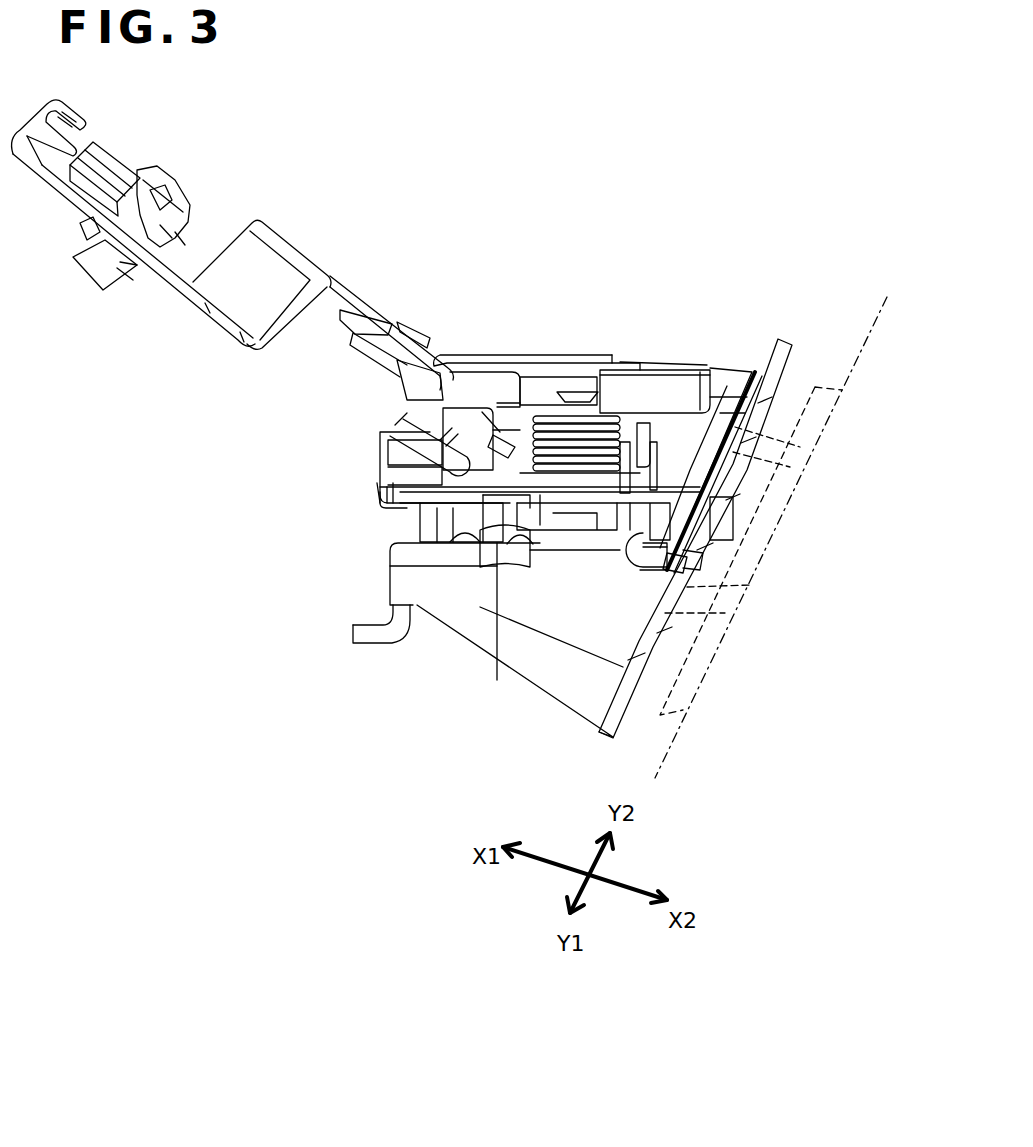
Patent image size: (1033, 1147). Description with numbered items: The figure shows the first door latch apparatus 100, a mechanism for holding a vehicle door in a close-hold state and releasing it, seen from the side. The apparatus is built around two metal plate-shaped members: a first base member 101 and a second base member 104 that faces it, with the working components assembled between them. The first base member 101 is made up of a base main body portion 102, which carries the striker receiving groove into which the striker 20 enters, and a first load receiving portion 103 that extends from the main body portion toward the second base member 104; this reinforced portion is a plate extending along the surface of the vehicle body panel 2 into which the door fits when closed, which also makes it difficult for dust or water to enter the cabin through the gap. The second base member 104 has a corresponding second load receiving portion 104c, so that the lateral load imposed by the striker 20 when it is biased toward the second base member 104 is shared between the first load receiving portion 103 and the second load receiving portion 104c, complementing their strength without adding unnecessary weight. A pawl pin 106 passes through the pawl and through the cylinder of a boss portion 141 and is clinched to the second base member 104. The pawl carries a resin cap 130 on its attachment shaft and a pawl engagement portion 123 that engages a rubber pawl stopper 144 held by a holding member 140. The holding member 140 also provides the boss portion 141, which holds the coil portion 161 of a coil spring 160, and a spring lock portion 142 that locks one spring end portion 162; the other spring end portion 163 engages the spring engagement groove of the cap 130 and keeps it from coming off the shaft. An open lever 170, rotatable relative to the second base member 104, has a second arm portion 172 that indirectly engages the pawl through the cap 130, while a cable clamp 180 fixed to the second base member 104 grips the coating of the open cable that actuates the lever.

The vehicle body panel 2 is at (865, 330).
The striker 20 is at (783, 420).
The first door latch apparatus 100 is at (700, 290).
The first base member 101 is at (388, 587).
The base main body portion 102 is at (522, 647).
The first load receiving portion 103 is at (785, 340).
The second base member 104 is at (312, 260).
The second load receiving portion 104c is at (733, 380).
The pawl pin 106 is at (578, 397).
The pawl engagement portion 123 is at (393, 452).
The cap 130 is at (470, 410).
The holding member 140 is at (420, 518).
The boss portion 141 is at (597, 483).
The spring lock portion 142 is at (657, 473).
The pawl stopper 144 is at (380, 485).
The coil spring 160 is at (636, 440).
The coil portion 161 is at (600, 440).
The spring end portion 162 is at (672, 382).
The spring end portion 163 is at (495, 490).
The open lever 170 is at (388, 392).
The second arm portion 172 is at (510, 438).
The cable clamp 180 is at (165, 185).